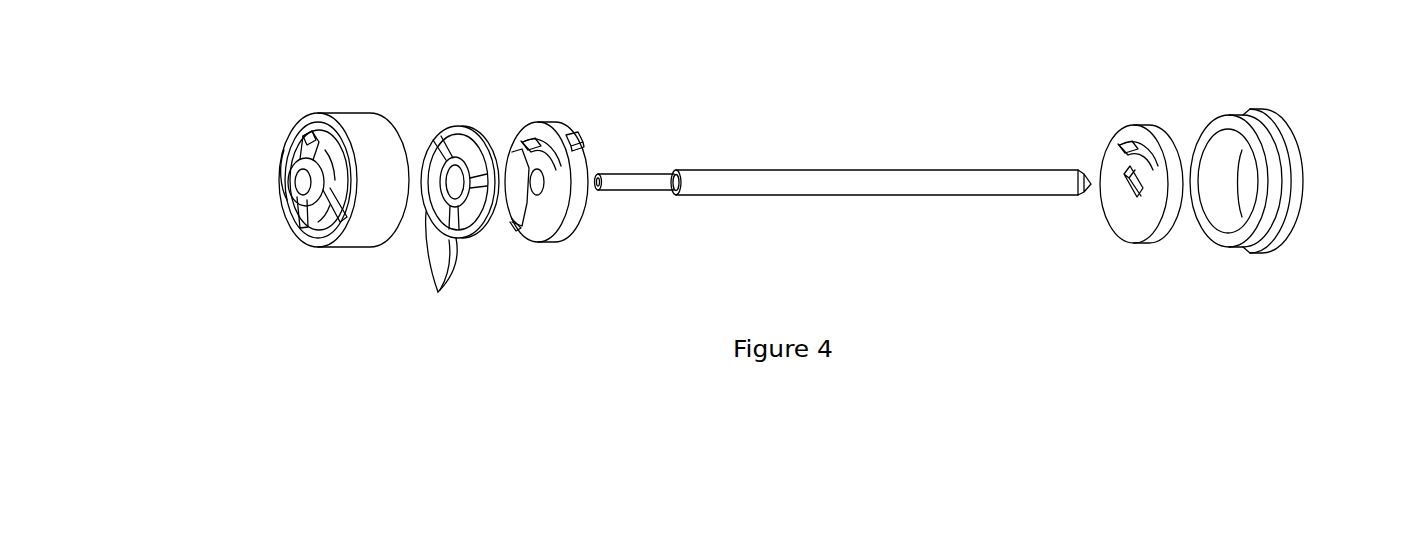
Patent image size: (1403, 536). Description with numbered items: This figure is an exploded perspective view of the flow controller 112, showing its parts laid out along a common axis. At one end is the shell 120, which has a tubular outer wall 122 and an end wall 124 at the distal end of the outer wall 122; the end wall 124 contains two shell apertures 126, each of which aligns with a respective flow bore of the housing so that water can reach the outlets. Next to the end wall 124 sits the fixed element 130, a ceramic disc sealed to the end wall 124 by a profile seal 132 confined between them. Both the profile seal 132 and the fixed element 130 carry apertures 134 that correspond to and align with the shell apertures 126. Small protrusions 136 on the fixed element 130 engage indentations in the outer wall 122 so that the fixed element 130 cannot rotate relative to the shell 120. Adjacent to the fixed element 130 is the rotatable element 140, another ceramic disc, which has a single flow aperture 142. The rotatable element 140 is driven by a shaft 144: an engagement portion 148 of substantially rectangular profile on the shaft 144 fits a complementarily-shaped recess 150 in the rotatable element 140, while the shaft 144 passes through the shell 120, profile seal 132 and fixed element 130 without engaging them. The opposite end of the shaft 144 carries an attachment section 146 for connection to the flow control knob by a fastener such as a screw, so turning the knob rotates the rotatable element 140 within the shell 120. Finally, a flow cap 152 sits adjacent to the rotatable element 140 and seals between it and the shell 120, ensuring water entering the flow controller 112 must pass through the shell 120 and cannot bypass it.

The flow controller 112 is at (402, 112).
The shell 120 is at (307, 250).
The tubular outer wall 122 is at (361, 244).
The end wall 124 is at (298, 240).
The shell apertures 126 is at (290, 187).
The fixed element 130 is at (563, 125).
The profile seal 132 is at (478, 128).
The apertures 134 is at (437, 267).
The small protrusions 136 is at (583, 134).
The rotatable element 140 is at (1133, 244).
The flow aperture 142 is at (1133, 135).
The shaft 144 is at (806, 196).
The attachment section 146 is at (641, 185).
The engagement portion 148 is at (1080, 197).
The recess 150 is at (1133, 198).
The flow cap 152 is at (1284, 136).